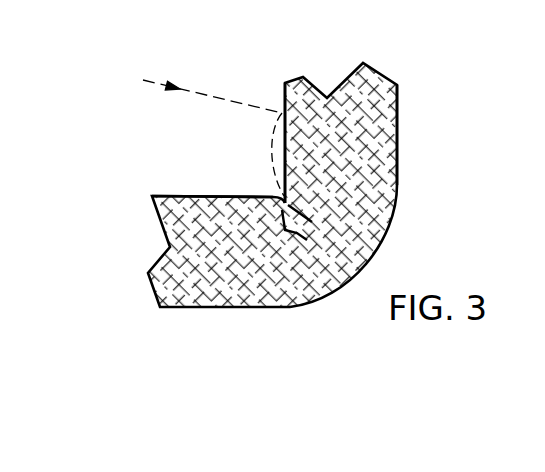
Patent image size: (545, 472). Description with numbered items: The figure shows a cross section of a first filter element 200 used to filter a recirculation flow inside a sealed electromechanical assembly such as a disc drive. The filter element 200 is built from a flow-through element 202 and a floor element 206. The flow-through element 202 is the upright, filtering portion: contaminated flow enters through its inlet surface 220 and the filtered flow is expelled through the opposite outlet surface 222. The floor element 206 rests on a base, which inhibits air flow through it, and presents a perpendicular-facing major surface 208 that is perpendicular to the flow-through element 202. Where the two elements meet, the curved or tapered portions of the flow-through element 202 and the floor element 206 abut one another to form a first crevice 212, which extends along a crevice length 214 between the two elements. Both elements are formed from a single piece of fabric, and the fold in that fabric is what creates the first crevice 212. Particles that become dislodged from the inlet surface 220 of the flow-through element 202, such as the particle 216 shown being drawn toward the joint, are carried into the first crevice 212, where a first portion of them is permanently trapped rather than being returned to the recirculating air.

The first filter element 200 is at (138, 125).
The flow-through element 202 is at (333, 84).
The floor element 206 is at (166, 238).
The perpendicular-facing major surface 208 is at (178, 195).
The first crevice 212 is at (299, 209).
The crevice length 214 is at (296, 228).
The particle 216 is at (284, 200).
The inlet surface 220 is at (285, 98).
The outlet surface 222 is at (398, 92).